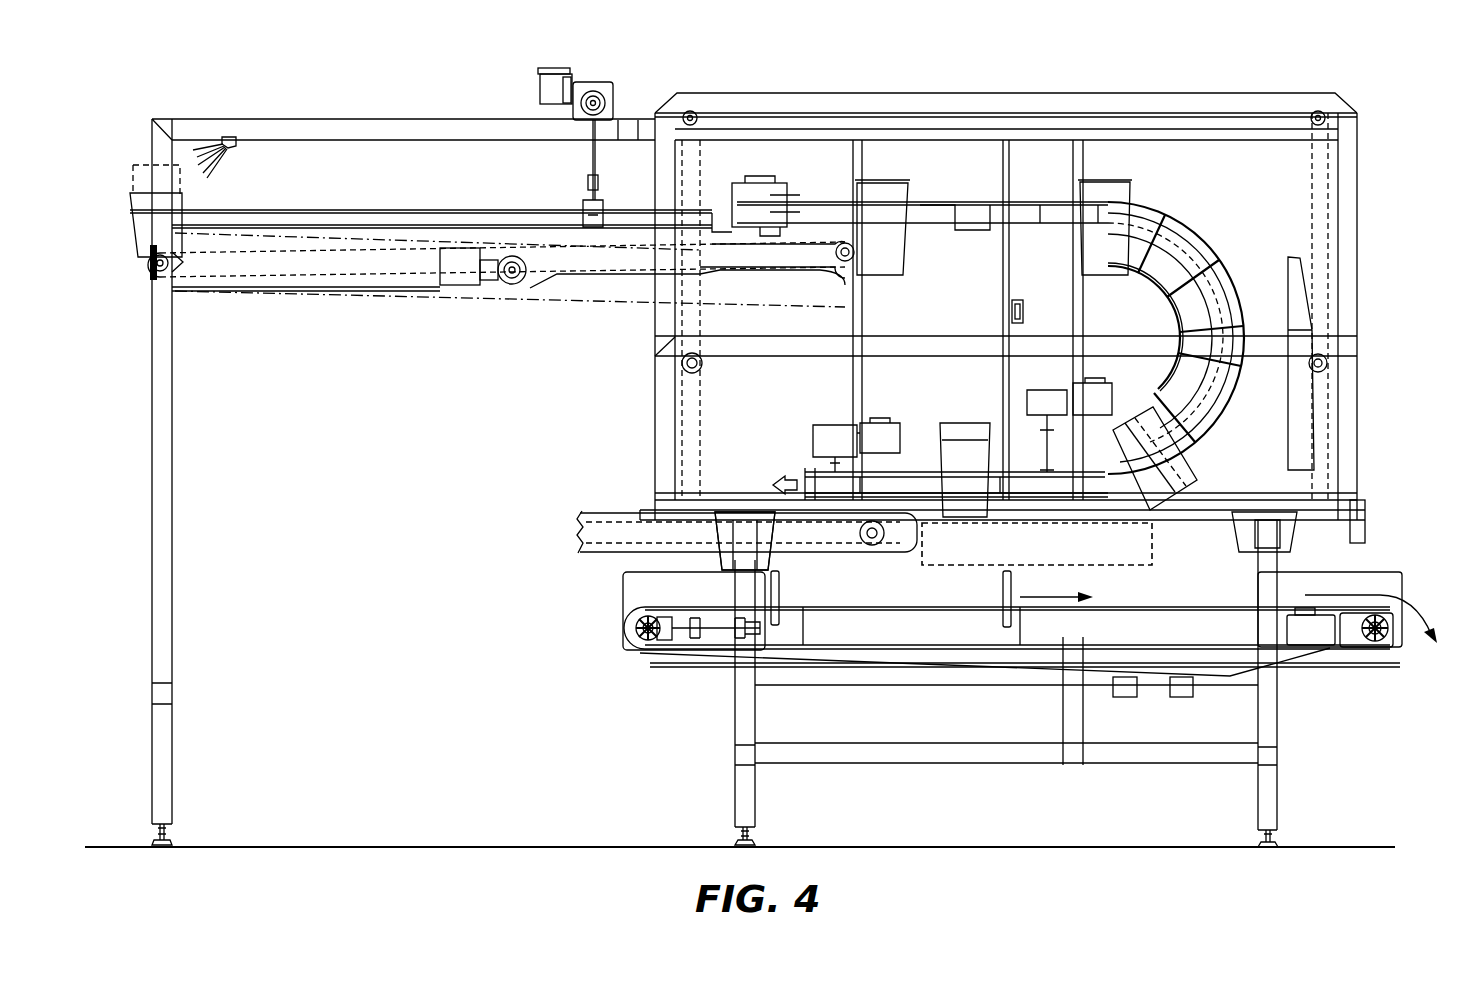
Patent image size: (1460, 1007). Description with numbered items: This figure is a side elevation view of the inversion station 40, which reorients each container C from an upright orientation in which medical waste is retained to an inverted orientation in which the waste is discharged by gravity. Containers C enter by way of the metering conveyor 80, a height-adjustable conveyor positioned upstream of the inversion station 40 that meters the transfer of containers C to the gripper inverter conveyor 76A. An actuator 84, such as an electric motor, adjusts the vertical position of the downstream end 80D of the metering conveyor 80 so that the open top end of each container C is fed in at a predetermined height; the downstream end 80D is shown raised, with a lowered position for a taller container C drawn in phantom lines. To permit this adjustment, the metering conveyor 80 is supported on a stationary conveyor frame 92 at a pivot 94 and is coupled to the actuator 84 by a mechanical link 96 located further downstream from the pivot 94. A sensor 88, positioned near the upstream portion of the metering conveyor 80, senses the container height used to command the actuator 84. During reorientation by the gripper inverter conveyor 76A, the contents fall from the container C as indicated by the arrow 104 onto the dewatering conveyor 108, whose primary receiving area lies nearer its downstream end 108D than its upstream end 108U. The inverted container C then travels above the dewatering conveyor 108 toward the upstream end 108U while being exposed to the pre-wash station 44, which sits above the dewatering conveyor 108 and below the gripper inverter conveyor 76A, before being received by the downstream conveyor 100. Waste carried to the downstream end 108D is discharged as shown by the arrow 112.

The inversion station 40 is at (1364, 171).
The pre-wash station 44 is at (1110, 565).
The gripper inverter conveyor 76A is at (1040, 205).
The metering conveyor 80 is at (378, 208).
The downstream end of the metering conveyor 80D is at (818, 245).
The actuator 84 is at (542, 90).
The sensor 88 is at (228, 137).
The stationary conveyor frame 92 is at (165, 571).
The pivot 94 is at (152, 262).
The mechanical link 96 is at (595, 165).
The downstream conveyor 100 is at (620, 518).
The arrow 104 is at (1173, 500).
The dewatering conveyor 108 is at (843, 622).
The upstream end of the dewatering conveyor 108U is at (630, 617).
The downstream end of the dewatering conveyor 108D is at (1397, 650).
The arrow 112 is at (1418, 620).
The container C is at (135, 175).